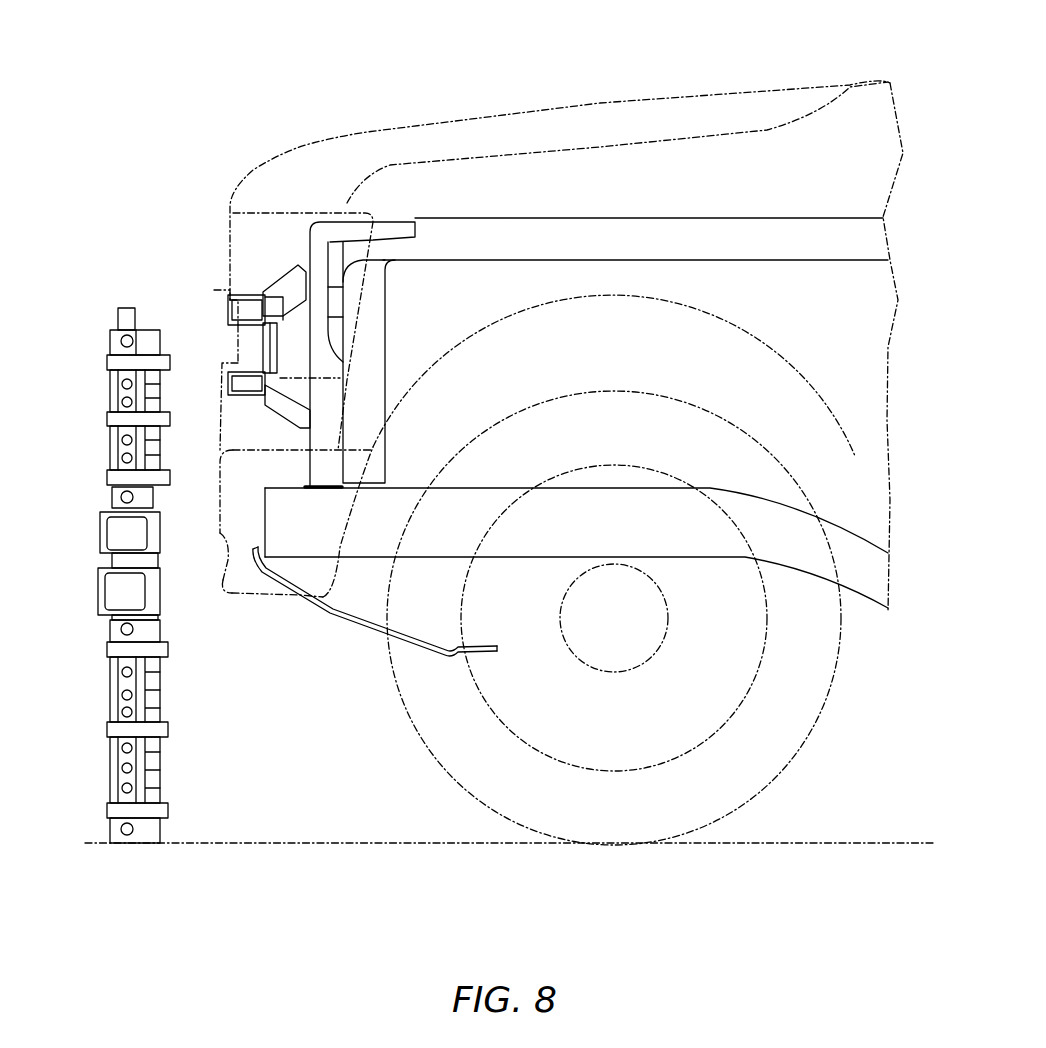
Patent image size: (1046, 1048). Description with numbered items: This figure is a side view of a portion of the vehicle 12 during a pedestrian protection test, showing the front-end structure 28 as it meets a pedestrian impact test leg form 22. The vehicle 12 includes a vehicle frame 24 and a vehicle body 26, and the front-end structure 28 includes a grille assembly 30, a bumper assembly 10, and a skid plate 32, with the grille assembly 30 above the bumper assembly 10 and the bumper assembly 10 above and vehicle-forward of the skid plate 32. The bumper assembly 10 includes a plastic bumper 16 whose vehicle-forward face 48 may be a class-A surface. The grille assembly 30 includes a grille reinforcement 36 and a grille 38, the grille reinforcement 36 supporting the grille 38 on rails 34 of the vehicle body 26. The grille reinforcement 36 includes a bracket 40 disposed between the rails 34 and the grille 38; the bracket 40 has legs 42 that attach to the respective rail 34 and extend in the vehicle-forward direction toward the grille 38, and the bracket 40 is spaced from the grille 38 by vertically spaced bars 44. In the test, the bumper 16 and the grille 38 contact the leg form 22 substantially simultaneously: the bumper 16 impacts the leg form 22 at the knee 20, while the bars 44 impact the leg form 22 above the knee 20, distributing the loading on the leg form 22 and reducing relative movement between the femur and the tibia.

The bumper assembly 10 is at (256, 615).
The vehicle 12 is at (720, 68).
The bumper 16 is at (217, 588).
The knee 20 is at (94, 553).
The pedestrian impact test leg form 22 is at (82, 373).
The vehicle frame 24 is at (882, 618).
The vehicle body 26 is at (892, 352).
The front-end structure 28 is at (198, 230).
The grille assembly 30 is at (226, 340).
The skid plate 32 is at (368, 637).
The rail 34 is at (815, 598).
The grille reinforcement 36 is at (261, 250).
The grille 38 is at (215, 289).
The bracket 40 is at (285, 273).
The leg 42 is at (287, 303).
The bar 44 is at (227, 312).
The vehicle-forward face 48 is at (223, 567).